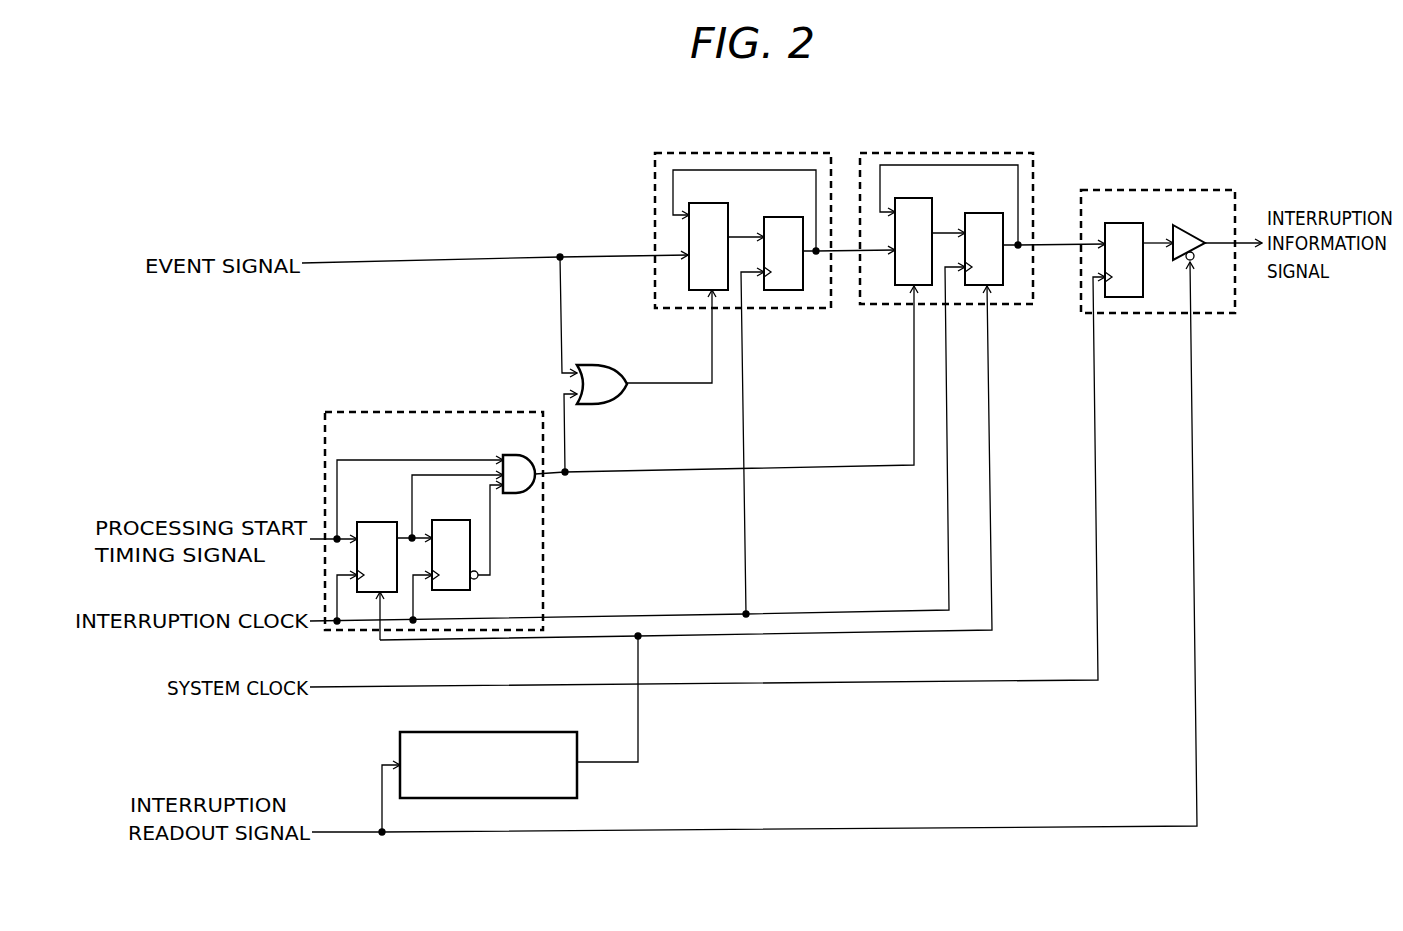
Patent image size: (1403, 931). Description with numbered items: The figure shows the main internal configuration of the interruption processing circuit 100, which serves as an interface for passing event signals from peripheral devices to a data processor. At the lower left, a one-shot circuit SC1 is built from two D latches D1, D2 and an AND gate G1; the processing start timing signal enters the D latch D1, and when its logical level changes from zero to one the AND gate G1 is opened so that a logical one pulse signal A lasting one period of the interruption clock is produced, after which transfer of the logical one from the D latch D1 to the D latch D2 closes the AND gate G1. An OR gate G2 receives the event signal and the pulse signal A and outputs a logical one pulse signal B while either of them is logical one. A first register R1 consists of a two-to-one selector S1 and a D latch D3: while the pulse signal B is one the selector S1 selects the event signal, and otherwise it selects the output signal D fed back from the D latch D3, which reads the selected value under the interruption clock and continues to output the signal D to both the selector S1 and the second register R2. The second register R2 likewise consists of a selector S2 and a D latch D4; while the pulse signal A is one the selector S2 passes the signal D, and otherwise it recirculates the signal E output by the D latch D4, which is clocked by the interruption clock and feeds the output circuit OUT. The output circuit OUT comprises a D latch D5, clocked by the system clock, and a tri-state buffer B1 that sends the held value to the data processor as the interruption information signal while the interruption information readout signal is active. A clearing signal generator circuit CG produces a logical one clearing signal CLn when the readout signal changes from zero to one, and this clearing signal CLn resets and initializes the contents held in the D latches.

The interruption processing circuit 100 is at (528, 181).
The first register R1 is at (774, 152).
The second register R2 is at (975, 152).
The output circuit OUT is at (1170, 188).
The one-shot circuit SC1 is at (487, 412).
The 2TO1 selector S1 is at (695, 204).
The 2TO1 selector S2 is at (900, 199).
The D latch D1 is at (360, 522).
The D latch D2 is at (440, 507).
The D latch D3 is at (768, 218).
The D latch D4 is at (970, 214).
The D latch D5 is at (1108, 224).
The AND gate G1 is at (516, 455).
The OR gate G2 is at (617, 355).
The tri-state buffer B1 is at (1195, 238).
The clearing signal generator circuit CG is at (542, 732).
The pulse signal A is at (724, 380).
The pulse signal B is at (669, 336).
The output signal D is at (855, 238).
The signal E is at (1061, 233).
The clearing signal CLn is at (686, 525).